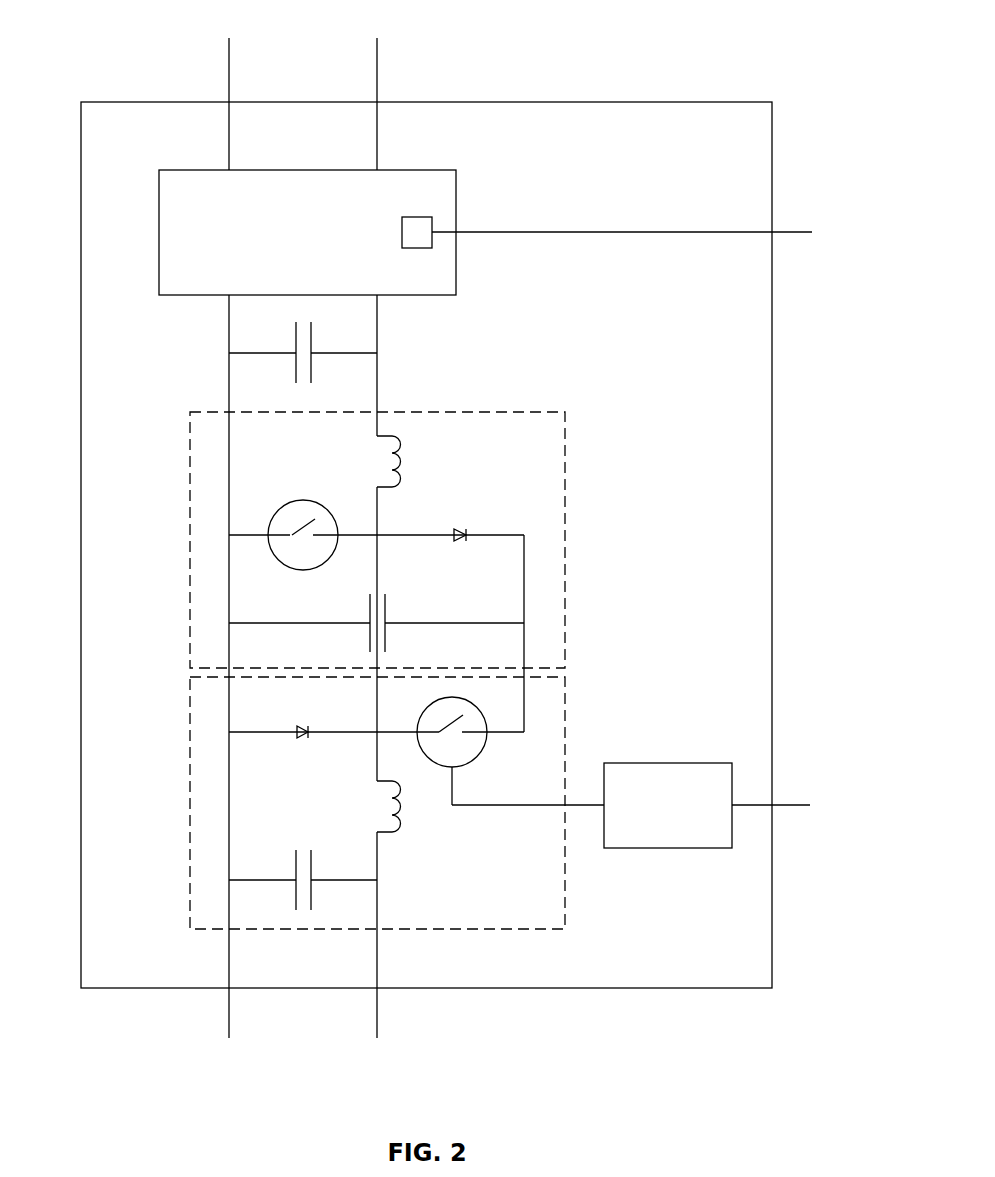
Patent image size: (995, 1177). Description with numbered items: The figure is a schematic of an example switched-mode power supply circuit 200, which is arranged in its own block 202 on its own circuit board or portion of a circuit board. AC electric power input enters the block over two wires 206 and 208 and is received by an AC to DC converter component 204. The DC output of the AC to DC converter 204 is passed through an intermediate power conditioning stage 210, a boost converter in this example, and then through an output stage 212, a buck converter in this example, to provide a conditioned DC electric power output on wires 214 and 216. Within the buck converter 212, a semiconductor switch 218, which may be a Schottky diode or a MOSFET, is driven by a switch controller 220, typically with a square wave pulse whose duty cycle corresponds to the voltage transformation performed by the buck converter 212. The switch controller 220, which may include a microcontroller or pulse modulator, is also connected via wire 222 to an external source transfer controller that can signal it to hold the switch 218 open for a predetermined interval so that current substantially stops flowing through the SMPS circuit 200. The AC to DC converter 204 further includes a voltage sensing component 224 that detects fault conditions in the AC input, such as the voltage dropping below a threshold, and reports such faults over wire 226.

The switched-mode power supply circuit 200 is at (463, 567).
The block 202 is at (595, 356).
The AC to DC converter component 204 is at (173, 199).
The wire 206 is at (220, 131).
The wire 208 is at (386, 133).
The intermediate power conditioning stage 210 is at (476, 504).
The output stage 212 is at (411, 779).
The wire 214 is at (220, 1014).
The wire 216 is at (387, 1014).
The semiconductor switch 218 is at (497, 719).
The switch controller 220 is at (651, 839).
The wire 222 is at (752, 795).
The voltage sensing component 224 is at (419, 205).
The wire 226 is at (563, 222).